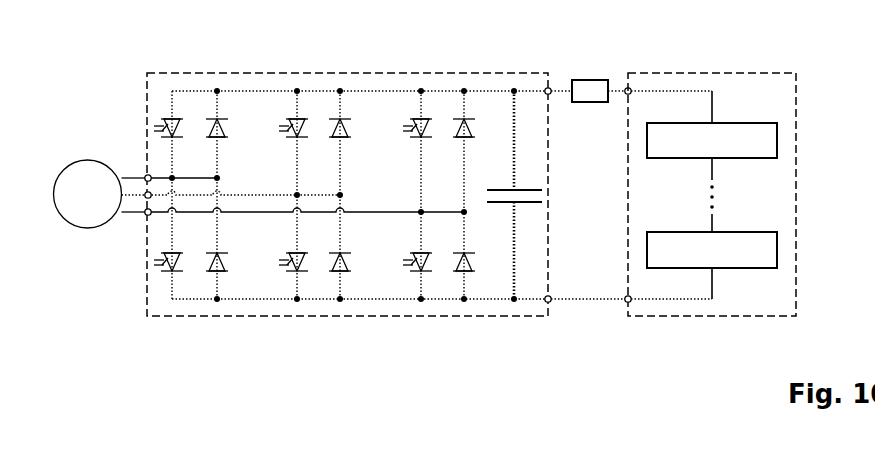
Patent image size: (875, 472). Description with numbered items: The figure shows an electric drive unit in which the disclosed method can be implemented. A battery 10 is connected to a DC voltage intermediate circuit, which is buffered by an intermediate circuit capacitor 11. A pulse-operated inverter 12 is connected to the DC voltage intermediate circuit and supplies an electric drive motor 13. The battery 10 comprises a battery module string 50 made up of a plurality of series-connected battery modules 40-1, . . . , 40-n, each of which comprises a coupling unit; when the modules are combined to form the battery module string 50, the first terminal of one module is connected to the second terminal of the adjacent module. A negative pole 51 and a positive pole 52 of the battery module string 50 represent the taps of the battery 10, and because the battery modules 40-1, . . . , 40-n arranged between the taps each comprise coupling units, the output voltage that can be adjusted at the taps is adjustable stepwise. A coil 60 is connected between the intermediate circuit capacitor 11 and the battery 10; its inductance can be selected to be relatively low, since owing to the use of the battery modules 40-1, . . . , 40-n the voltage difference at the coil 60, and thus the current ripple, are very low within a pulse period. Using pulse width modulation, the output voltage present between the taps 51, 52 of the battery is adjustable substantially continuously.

The battery 10 is at (678, 72).
The intermediate circuit capacitor 11 is at (531, 189).
The pulse-operated inverter 12 is at (320, 72).
The electric drive motor 13 is at (88, 160).
The battery module 40-n is at (777, 141).
The battery module 40-1 is at (777, 250).
The battery module string 50 is at (712, 283).
The negative pole 51 is at (628, 302).
The positive pole 52 is at (625, 90).
The coil 60 is at (584, 80).